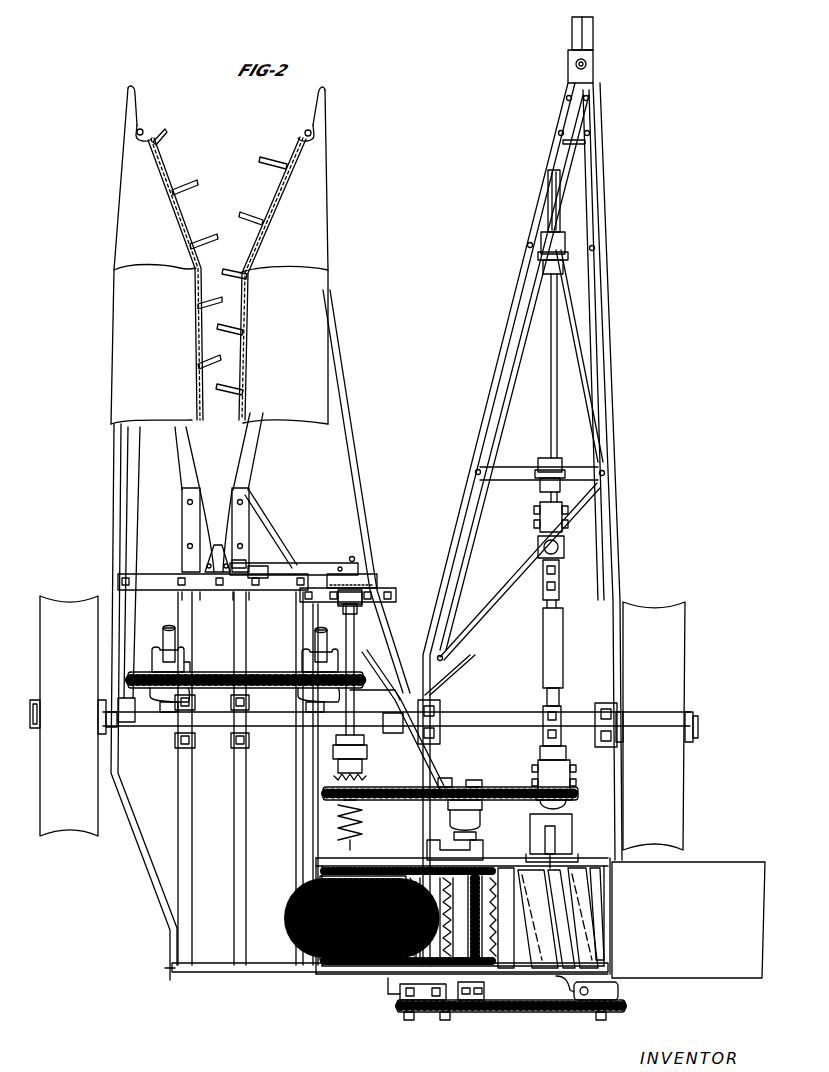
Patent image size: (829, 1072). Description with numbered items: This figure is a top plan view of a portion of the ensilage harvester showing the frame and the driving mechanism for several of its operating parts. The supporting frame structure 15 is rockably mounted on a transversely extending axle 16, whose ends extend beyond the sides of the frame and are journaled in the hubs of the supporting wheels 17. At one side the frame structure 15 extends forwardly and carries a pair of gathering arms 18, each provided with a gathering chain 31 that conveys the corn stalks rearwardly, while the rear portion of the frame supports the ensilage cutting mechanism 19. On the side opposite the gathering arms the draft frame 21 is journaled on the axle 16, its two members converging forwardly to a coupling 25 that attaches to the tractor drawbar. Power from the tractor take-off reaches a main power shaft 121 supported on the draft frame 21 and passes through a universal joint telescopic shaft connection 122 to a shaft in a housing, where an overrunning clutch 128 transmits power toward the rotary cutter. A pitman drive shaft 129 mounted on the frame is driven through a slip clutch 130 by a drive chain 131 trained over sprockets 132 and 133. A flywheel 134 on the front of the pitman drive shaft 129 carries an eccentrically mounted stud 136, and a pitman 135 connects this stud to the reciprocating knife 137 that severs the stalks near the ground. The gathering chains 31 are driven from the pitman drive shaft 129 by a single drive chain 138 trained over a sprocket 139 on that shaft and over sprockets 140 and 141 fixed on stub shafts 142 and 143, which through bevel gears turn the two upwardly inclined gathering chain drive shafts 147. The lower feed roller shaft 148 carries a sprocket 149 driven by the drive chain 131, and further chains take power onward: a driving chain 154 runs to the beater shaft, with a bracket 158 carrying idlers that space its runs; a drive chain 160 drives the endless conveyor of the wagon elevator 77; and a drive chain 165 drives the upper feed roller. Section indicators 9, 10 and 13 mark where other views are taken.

The section line 9- 9 is at (163, 622).
The beater or roller assembly 10 is at (548, 725).
The section line 13- 13 is at (604, 21).
The supporting frame structure 15 is at (118, 522).
The axle 16 is at (258, 728).
The supporting wheels 17 is at (72, 815).
The gathering arms 18 is at (120, 202).
The ensilage cutting mechanism 19 is at (505, 985).
The draft frame 21 is at (614, 452).
The coupling 25 is at (600, 72).
The gathering chains 31 is at (248, 228).
The wagon elevator 77 is at (700, 861).
The main power shaft 121 is at (540, 446).
The universal joint telescopic shaft connection 122 is at (550, 670).
The overrunning clutch 128 is at (540, 782).
The pitman drive shaft 129 is at (350, 642).
The slip clutch 130 is at (362, 780).
The drive chain 131 is at (390, 800).
The sprocket 132 is at (572, 794).
The sprocket 133 is at (323, 795).
The flywheel 134 is at (363, 584).
The pitman 135 is at (312, 566).
The eccentrically mounted stud 136 is at (353, 552).
The reciprocating knife 137 is at (245, 570).
The drive chain 138 is at (218, 700).
The sprocket 139 is at (383, 690).
The sprocket 140 is at (298, 676).
The sprocket 141 is at (128, 678).
The stub shaft 142 is at (306, 718).
The stub shaft 143 is at (167, 712).
The gathering chain drive shafts 147 is at (165, 646).
The transversely extending shaft 148 is at (474, 780).
The sprocket 149 is at (444, 778).
The driving chain 154 is at (422, 1016).
The bracket 158 is at (398, 988).
The drive chain 160 is at (568, 1014).
The drive chain 165 is at (483, 1012).